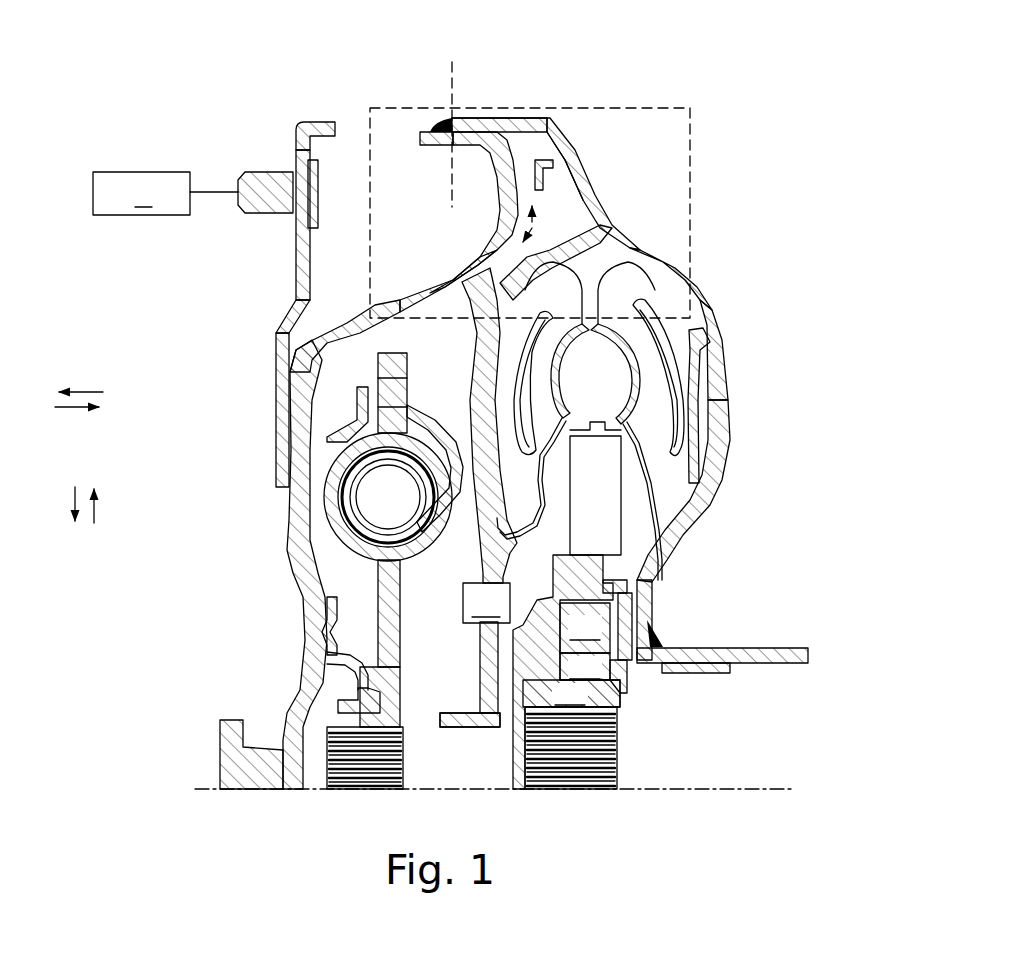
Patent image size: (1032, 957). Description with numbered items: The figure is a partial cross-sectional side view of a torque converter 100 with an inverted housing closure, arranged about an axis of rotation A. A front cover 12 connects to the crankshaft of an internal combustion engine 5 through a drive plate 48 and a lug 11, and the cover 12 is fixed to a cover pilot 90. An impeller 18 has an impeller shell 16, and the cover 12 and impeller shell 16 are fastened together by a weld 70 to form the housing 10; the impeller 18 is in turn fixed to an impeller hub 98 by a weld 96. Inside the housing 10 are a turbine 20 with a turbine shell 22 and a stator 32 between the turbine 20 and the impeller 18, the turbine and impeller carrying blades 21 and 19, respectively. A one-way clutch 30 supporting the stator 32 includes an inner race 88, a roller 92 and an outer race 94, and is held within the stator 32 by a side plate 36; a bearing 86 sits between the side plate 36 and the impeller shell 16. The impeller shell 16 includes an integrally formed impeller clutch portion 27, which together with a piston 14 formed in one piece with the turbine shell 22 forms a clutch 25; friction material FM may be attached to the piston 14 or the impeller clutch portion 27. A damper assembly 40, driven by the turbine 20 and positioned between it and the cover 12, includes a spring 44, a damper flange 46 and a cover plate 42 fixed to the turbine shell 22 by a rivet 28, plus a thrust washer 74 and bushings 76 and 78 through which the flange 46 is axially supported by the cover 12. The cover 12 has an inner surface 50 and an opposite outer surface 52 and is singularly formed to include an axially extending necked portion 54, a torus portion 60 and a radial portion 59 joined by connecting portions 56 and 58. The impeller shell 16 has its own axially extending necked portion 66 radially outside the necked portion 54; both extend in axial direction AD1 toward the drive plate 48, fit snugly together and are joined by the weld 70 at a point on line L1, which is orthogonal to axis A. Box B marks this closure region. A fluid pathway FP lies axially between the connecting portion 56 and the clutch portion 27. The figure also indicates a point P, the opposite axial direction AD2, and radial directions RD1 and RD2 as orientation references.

The internal combustion engine 5 is at (141, 193).
The housing 10 is at (552, 100).
The lug 11 is at (285, 172).
The front cover 12 is at (288, 530).
The piston 14 is at (605, 160).
The impeller shell 16 is at (732, 422).
The impeller 18 is at (712, 337).
The blades 19 is at (623, 302).
The turbine 20 is at (703, 377).
The blades 21 is at (525, 308).
The turbine shell 22 is at (690, 272).
The clutch 25 is at (602, 209).
The impeller clutch portion 27 is at (600, 190).
The rivet 28 is at (486, 603).
The one-way clutch 30 is at (630, 626).
The stator 32 is at (655, 560).
The side plate 36 is at (630, 688).
The damper assembly 40 is at (332, 406).
The cover plate 42 is at (340, 384).
The spring 44 is at (330, 457).
The damper flange 46 is at (336, 576).
The drive plate 48 is at (307, 224).
The inner surface 50 is at (468, 330).
The outer surface 52 is at (334, 308).
The axially extending necked portion 54 is at (419, 147).
The connecting portion 56 is at (495, 196).
The connecting portion 58 is at (298, 316).
The radial portion 59 is at (283, 498).
The torus portion 60 is at (462, 268).
The axially extending necked portion 66 is at (507, 118).
The weld 70 is at (437, 118).
The thrust washer 74 is at (330, 658).
The bushing 76 is at (338, 706).
The bushing 78 is at (455, 728).
The bearing 86 is at (630, 590).
The inner race 88 is at (473, 732).
The cover pilot 90 is at (220, 746).
The roller 92 is at (585, 665).
The outer race 94 is at (585, 628).
The weld 96 is at (665, 637).
The impeller hub 98 is at (762, 650).
The torque converter 100 is at (856, 366).
The axis of rotation A is at (760, 789).
The box B is at (690, 108).
The line L1 is at (452, 62).
The point P is at (494, 116).
The friction material FM is at (580, 118).
The pathway FP is at (570, 240).
The axial direction AD1 is at (87, 374).
The axial direction 2 AD2 is at (80, 423).
The radial direction 1 RD1 is at (122, 504).
The radial direction 2 RD2 is at (44, 503).